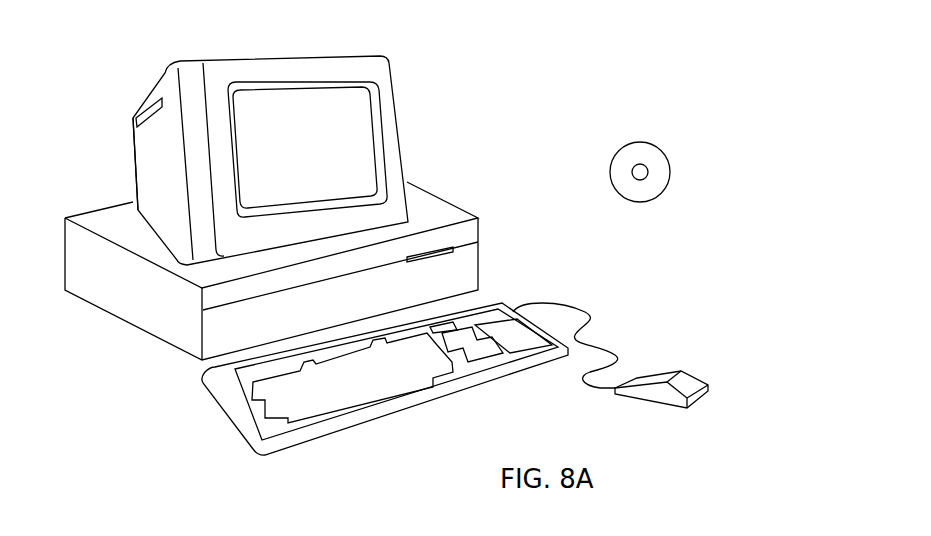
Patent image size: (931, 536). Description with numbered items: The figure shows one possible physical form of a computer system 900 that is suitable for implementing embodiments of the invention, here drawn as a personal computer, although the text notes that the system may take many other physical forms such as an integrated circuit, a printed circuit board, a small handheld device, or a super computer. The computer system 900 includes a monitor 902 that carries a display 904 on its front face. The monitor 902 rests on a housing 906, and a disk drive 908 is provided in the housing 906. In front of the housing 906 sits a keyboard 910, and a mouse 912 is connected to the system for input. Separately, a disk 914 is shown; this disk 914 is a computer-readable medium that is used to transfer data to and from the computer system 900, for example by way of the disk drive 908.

The computer system 900 is at (565, 36).
The monitor 902 is at (299, 159).
The display 904 is at (353, 112).
The housing 906 is at (295, 286).
The disk drive 908 is at (442, 245).
The keyboard 910 is at (380, 412).
The mouse 912 is at (682, 371).
The disk 914 is at (657, 143).